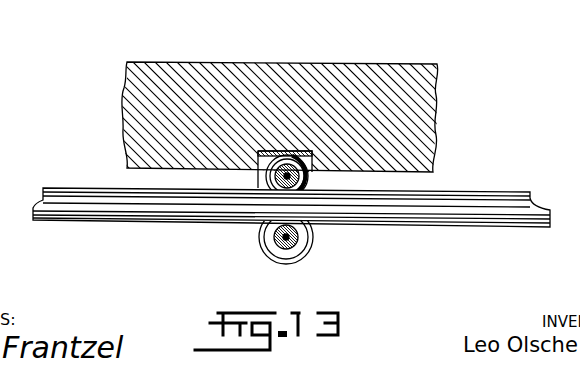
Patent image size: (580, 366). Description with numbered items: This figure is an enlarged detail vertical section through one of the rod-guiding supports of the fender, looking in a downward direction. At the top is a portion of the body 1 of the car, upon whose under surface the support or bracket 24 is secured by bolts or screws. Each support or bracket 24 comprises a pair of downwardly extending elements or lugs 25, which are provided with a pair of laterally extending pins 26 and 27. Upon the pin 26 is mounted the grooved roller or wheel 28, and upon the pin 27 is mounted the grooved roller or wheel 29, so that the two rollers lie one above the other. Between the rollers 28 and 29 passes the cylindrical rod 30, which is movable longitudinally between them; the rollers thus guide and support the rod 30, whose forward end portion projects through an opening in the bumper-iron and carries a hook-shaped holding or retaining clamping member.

The body of a car 1 is at (362, 73).
The support or bracket 24 is at (297, 150).
The laterally extending pin 26 is at (289, 181).
The grooved roller or wheel 28 is at (258, 152).
The cylindrical rod 30 is at (493, 206).
The downwardly extending element or lug 25 is at (288, 265).
The laterally extending pin 27 is at (302, 240).
The grooved roller or wheel 29 is at (272, 243).